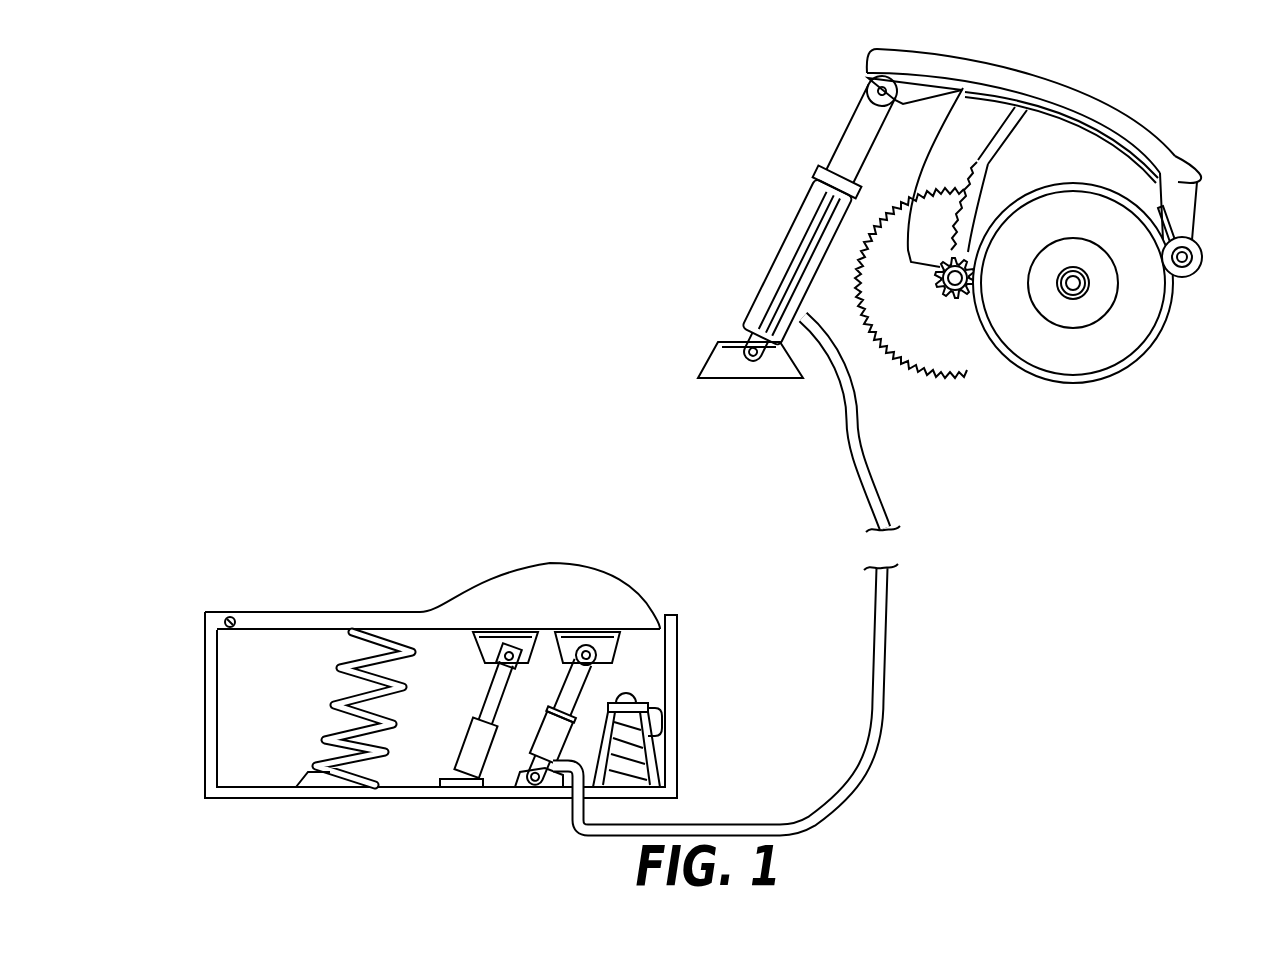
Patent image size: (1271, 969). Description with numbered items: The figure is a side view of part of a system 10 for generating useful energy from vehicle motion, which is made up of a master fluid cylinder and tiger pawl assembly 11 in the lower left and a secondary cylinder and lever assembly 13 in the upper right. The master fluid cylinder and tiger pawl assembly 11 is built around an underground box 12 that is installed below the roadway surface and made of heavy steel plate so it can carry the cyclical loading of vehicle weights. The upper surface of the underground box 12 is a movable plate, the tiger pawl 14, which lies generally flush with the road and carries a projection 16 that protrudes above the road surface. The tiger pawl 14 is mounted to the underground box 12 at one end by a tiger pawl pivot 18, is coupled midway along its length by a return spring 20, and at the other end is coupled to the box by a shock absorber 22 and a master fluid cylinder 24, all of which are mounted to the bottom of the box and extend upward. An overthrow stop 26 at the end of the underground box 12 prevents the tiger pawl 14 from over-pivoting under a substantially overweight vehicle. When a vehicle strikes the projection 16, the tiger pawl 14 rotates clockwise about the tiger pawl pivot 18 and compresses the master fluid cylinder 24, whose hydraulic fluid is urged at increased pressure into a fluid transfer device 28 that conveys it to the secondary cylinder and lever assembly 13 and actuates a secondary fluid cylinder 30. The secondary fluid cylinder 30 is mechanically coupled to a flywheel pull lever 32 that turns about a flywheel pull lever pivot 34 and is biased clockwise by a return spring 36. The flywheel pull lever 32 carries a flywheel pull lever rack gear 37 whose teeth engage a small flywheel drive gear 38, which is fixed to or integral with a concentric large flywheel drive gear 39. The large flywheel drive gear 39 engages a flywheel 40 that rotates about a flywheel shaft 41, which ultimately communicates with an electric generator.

The system for generating useful energy from vehicle motion 10 is at (714, 439).
The master fluid cylinder and tiger pawl assembly 11 is at (534, 573).
The underground box 12 is at (205, 682).
The secondary cylinder and lever assembly 13 is at (962, 226).
The tiger pawl 14 is at (318, 610).
The projection 16 is at (548, 562).
The tiger pawl pivot 18 is at (230, 616).
The return spring 20 is at (322, 734).
The shock absorber 22 is at (462, 742).
The master fluid cylinder 24 is at (542, 738).
The overthrow stop 26 is at (628, 692).
The fluid transfer device 28 is at (866, 666).
The secondary fluid cylinder 30 is at (762, 286).
The flywheel pull lever 32 is at (1112, 108).
The flywheel pull lever pivot 34 is at (1202, 258).
The return spring 36 is at (1182, 220).
The flywheel pull lever rack gear 37 is at (948, 136).
The small flywheel drive gear 38 is at (956, 300).
The large flywheel drive gear 39 is at (928, 346).
The flywheel 40 is at (1073, 291).
The flywheel shaft 41 is at (1085, 284).